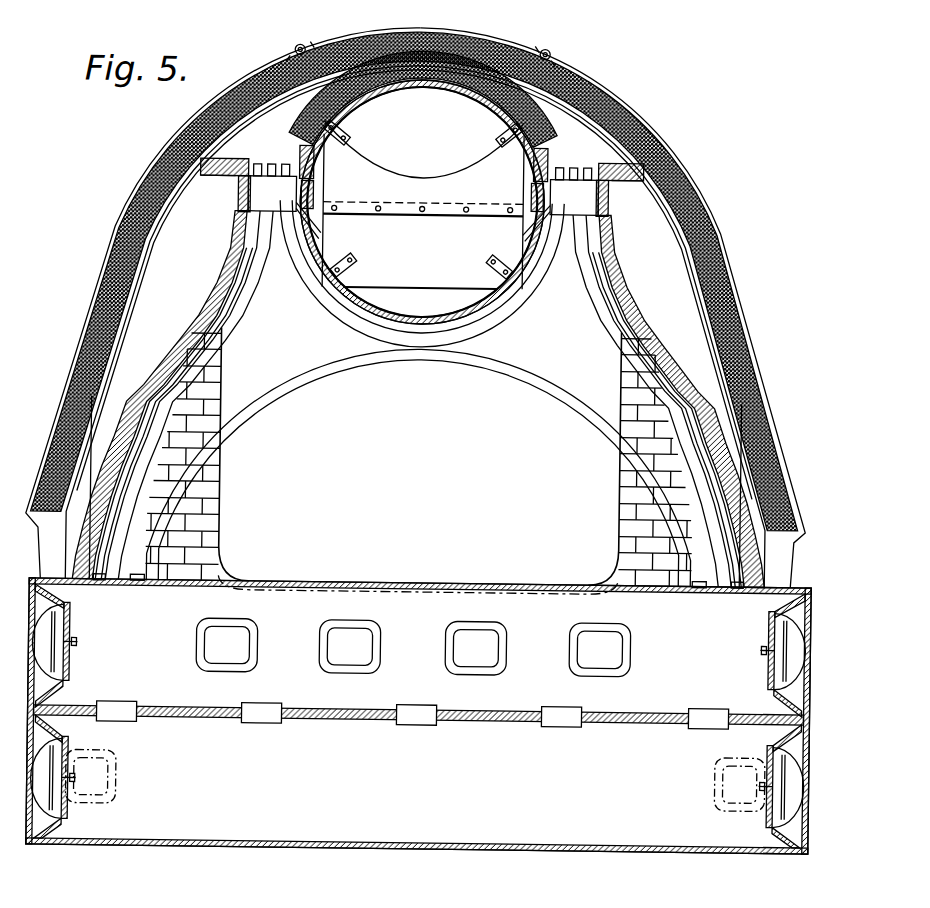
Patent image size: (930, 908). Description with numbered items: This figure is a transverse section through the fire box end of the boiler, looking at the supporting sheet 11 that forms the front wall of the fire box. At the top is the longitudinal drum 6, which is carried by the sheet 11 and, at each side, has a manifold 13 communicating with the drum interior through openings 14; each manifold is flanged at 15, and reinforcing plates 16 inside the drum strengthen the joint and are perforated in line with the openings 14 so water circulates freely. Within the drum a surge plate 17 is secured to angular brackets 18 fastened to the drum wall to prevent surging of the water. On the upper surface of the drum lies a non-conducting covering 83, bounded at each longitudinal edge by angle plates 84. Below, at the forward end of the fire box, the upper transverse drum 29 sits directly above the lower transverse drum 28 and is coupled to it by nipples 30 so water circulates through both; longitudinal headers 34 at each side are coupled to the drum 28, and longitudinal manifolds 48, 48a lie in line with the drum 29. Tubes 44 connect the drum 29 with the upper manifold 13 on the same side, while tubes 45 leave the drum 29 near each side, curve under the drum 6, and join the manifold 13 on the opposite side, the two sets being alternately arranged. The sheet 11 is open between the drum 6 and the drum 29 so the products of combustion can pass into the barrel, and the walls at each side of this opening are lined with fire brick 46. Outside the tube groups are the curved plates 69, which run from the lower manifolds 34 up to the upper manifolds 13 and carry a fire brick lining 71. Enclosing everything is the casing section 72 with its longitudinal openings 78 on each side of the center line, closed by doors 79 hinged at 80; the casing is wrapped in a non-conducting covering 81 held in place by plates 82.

The drum 6 is at (422, 201).
The supporting sheet 11 is at (225, 530).
The manifolds 13 is at (423, 196).
The openings 14 is at (311, 198).
The flange 15 is at (318, 240).
The reinforcing plates 16 is at (321, 165).
The surge plates 17 is at (408, 283).
The angular brackets 18 is at (343, 127).
The drum 28 is at (293, 849).
The drum 29 is at (376, 583).
The nipples 30 is at (123, 705).
The longitudinal headers 34 is at (122, 790).
The tubes 44 is at (236, 335).
The tubes 45 is at (512, 324).
The fire brick 46 is at (218, 492).
The longitudinal manifold 48 is at (261, 650).
The longitudinal manifold 48a is at (384, 652).
The plates 69 is at (190, 343).
The fire brick lining 71 is at (164, 380).
The casing section 72 is at (97, 438).
The longitudinal openings 78 is at (252, 114).
The doors 79 is at (182, 146).
The hinge 80 is at (300, 46).
The non-conducting covering 81 is at (77, 367).
The plates 82 is at (108, 268).
The non-conducting covering 83 is at (518, 110).
The angle plates 84 is at (297, 153).